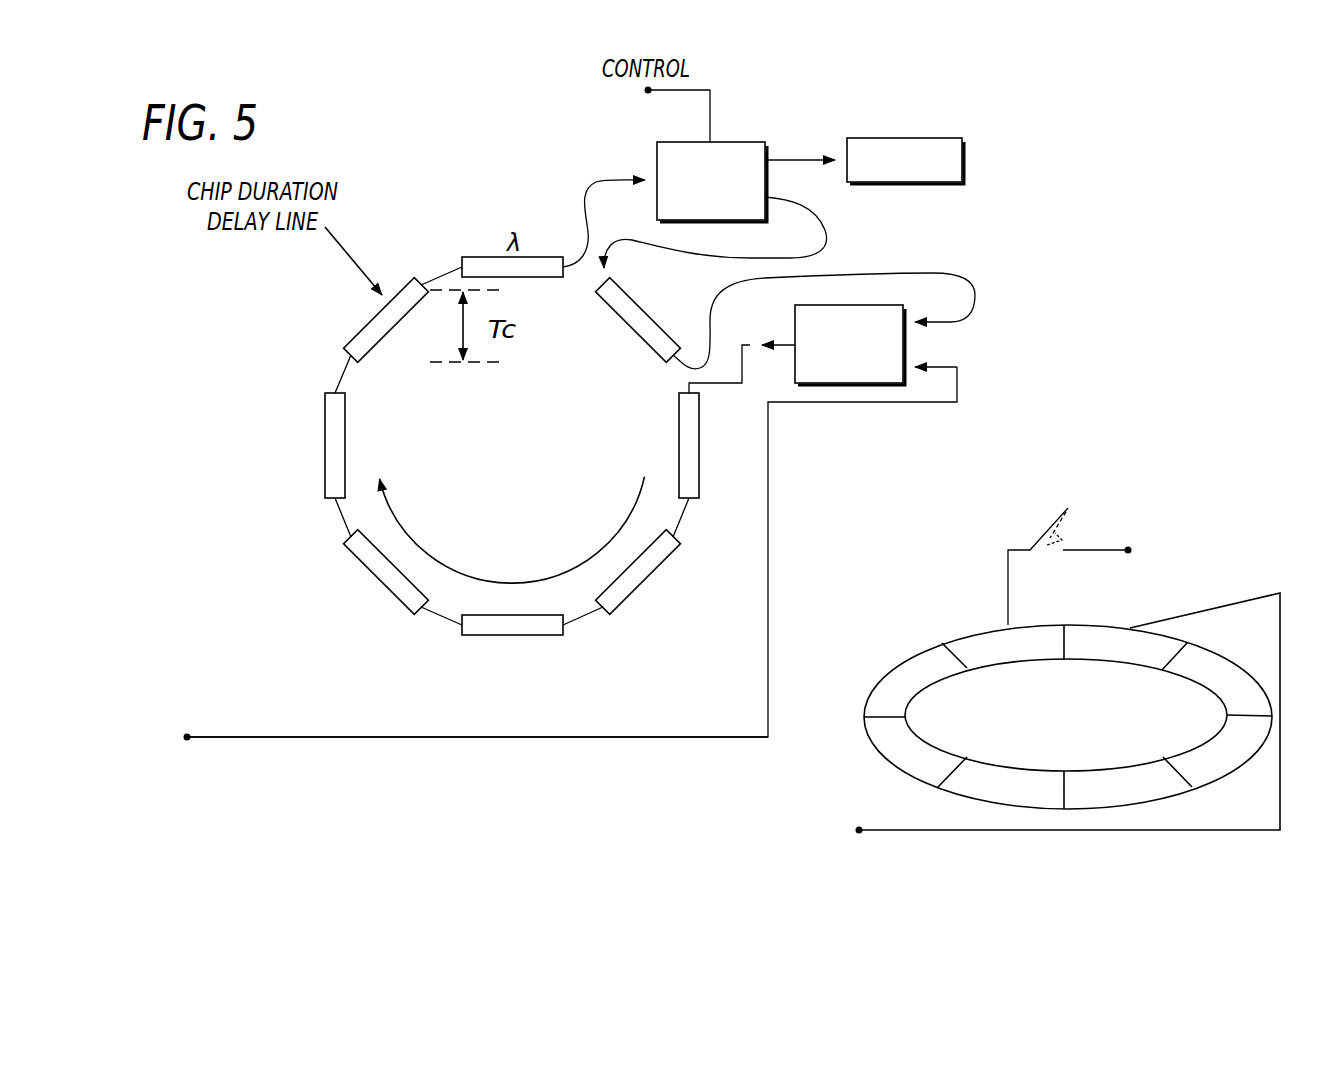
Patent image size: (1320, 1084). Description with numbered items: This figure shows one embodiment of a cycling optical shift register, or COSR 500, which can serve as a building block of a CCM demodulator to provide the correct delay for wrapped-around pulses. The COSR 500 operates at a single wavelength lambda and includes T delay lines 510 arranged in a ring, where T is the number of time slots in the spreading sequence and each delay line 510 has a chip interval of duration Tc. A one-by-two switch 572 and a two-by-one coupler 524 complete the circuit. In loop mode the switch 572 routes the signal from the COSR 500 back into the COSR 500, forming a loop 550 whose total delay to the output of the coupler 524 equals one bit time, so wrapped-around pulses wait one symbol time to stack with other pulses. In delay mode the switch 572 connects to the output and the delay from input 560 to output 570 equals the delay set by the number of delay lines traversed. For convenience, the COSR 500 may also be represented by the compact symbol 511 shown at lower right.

The cycling optical shift register 500 is at (477, 750).
The delay line 510 is at (360, 330).
The COSR symbol 511 is at (1055, 843).
The 2x1 coupler 524 is at (848, 383).
The loop 550 is at (510, 582).
The input 560 is at (187, 737).
The output 570 is at (903, 138).
The 1 x 2 switch 572 is at (680, 142).